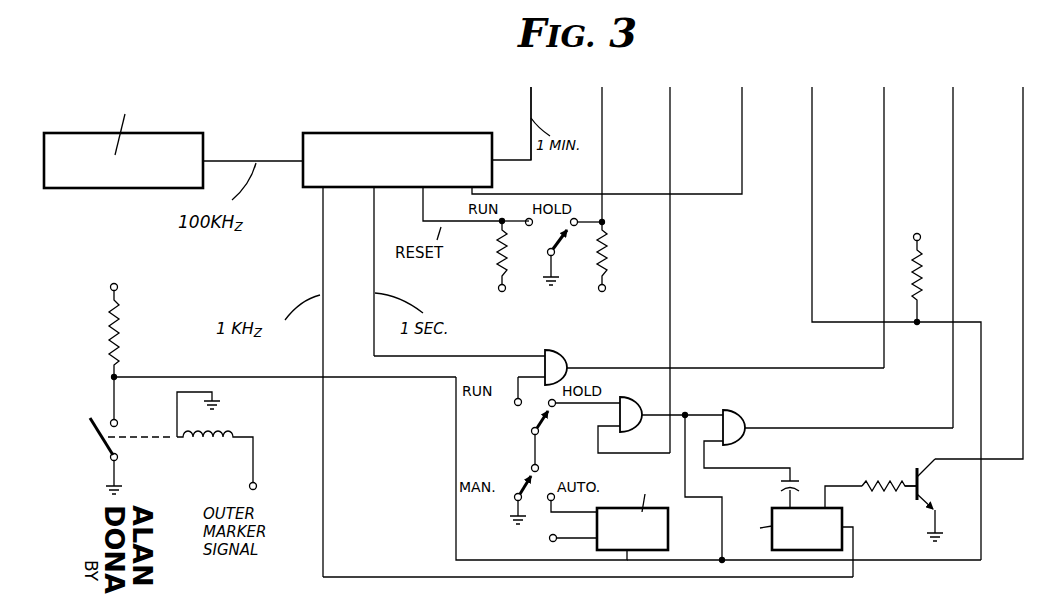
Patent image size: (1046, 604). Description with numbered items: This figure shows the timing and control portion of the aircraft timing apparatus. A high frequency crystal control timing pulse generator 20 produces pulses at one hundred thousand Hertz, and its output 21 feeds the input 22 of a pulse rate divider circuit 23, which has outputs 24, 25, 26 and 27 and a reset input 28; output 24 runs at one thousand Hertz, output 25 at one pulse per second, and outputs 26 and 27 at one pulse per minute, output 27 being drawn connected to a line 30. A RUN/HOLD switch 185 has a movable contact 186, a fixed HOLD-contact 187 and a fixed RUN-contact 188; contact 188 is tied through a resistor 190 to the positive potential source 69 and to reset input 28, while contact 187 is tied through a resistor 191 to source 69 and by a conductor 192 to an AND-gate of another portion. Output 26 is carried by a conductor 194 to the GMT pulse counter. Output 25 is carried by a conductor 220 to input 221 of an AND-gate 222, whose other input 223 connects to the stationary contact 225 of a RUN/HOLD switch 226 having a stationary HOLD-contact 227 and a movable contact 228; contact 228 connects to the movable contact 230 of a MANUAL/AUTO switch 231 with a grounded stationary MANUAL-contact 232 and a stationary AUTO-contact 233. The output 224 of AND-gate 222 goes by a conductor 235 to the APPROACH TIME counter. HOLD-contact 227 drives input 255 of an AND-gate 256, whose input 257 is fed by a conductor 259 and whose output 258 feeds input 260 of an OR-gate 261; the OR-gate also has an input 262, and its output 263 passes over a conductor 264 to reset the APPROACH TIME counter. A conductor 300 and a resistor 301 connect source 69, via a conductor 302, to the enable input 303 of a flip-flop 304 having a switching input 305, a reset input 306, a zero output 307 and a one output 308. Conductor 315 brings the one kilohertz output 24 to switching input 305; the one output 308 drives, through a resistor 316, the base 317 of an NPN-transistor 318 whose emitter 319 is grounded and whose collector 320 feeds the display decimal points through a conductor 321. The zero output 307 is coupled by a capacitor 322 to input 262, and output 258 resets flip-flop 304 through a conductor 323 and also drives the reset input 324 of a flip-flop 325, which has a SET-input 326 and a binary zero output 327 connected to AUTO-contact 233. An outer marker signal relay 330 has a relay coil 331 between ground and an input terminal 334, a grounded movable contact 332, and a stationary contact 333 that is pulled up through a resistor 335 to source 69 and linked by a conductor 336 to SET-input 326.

The timing pulse generator 20 is at (187, 132).
The output 21 is at (208, 161).
The input 22 is at (300, 161).
The pulse rate divider circuit 23 is at (392, 131).
The output 24 is at (322, 188).
The output 25 is at (374, 188).
The output 26 is at (472, 190).
The output 27 is at (500, 156).
The reset input 28 is at (423, 190).
The one-minute line 30 is at (531, 95).
The positive potential source 69 is at (919, 234).
The RUN/HOLD switch 185 is at (545, 272).
The movable contact 186 is at (585, 253).
The fixed HOLD-contact 187 is at (574, 226).
The fixed RUN-contact 188 is at (517, 252).
The resistor 190 is at (498, 262).
The resistor 191 is at (607, 255).
The conductor 192 is at (602, 124).
The conductor 194 is at (742, 153).
The conductor 220 is at (373, 308).
The input 221 is at (545, 352).
The AND-gate 222 is at (569, 356).
The input 223 is at (545, 378).
The output 224 is at (572, 372).
The stationary contact 225 is at (514, 404).
The RUN/HOLD switch 226 is at (550, 416).
The stationary HOLD-contact 227 is at (540, 416).
The movable contact 228 is at (506, 449).
The movable contact 230 is at (530, 472).
The MANUAL/AUTO switch 231 is at (540, 484).
The stationary MANUAL-contact 232 is at (515, 500).
The stationary AUTO-contact 233 is at (556, 498).
The conductor 235 is at (884, 108).
The input 255 is at (612, 404).
The AND-gate 256 is at (638, 382).
The input 257 is at (614, 429).
The output 258 is at (630, 401).
The conductor 259 is at (670, 131).
The input 260 is at (723, 410).
The OR-gate 261 is at (748, 416).
The input 262 is at (706, 450).
The output 263 is at (752, 429).
The conductor 264 is at (953, 118).
The conductor 300 is at (812, 113).
The resistor 301 is at (913, 265).
The conductor 302 is at (982, 493).
The enable input 303 is at (826, 552).
The flip-flop 304 is at (771, 538).
The switching input 305 is at (846, 527).
The reset input 306 is at (796, 552).
The 0 output 307 is at (792, 506).
The 1 output 308 is at (829, 508).
The conductor 315 is at (330, 441).
The resistor 316 is at (871, 482).
The base 317 is at (913, 480).
The NPN-transistor 318 is at (923, 485).
The emitter 319 is at (930, 500).
The collector 320 is at (928, 462).
The conductor 321 is at (1023, 110).
The capacitor 322 is at (794, 477).
The conductor 323 is at (688, 481).
The reset input 324 is at (660, 556).
The flip-flop 325 is at (668, 509).
The SET-input 326 is at (632, 552).
The binary 0 output 327 is at (597, 519).
The outer marker signal relay 330 is at (229, 430).
The relay coil 331 is at (203, 447).
The movable contact 332 is at (96, 440).
The stationary contact 333 is at (118, 424).
The input terminal 334 is at (258, 484).
The resistor 335 is at (123, 336).
The conductor 336 is at (178, 377).